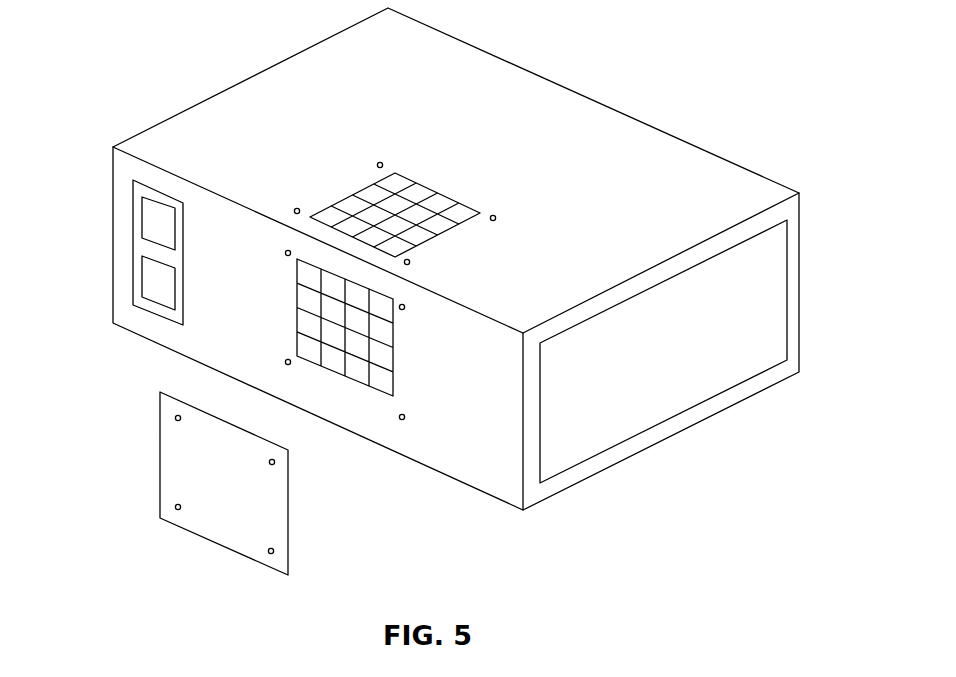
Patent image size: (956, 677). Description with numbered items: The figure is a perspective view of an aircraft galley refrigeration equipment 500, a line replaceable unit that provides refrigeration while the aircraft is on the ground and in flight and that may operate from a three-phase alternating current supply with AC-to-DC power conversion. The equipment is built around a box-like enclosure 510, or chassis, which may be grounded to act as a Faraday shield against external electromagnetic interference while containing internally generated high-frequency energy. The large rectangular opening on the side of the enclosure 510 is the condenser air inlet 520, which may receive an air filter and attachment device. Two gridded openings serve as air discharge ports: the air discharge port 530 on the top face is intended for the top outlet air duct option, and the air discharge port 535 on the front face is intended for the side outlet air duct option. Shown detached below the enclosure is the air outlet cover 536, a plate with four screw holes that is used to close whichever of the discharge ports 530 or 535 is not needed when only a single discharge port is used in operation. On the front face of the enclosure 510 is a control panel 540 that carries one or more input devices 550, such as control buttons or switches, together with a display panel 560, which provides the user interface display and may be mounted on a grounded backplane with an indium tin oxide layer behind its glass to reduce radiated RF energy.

The aircraft galley refrigeration equipment 500 is at (455, 255).
The enclosure 510 is at (512, 63).
The condenser air inlet 520 is at (768, 318).
The air discharge port 530 is at (458, 202).
The air discharge port 535 is at (393, 364).
The air outlet cover 536 is at (284, 508).
The control panel 540 is at (176, 222).
The input devices 550 is at (167, 310).
The display panel 560 is at (154, 268).